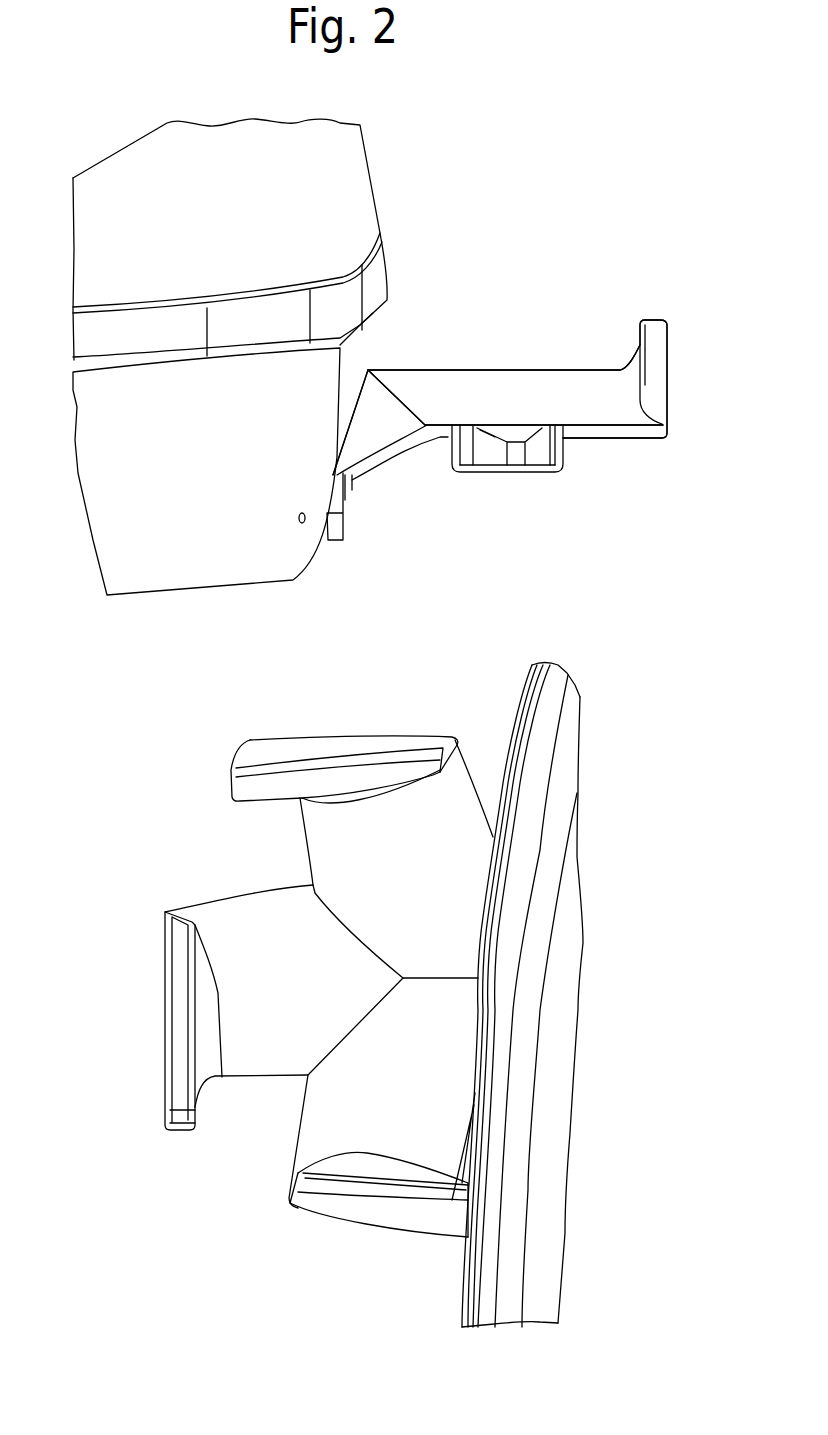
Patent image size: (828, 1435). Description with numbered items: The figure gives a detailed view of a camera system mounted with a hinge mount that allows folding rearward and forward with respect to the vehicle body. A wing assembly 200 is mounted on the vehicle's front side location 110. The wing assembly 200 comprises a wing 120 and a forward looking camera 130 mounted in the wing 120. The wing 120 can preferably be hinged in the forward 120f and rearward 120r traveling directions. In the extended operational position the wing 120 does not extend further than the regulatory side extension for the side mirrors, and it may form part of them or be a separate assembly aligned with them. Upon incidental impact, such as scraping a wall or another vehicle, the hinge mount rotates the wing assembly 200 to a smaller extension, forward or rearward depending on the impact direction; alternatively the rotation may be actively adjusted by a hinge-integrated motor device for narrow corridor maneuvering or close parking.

The vehicle front side location 110 is at (320, 222).
The wing 120 is at (550, 387).
The forward traveling direction 120f is at (313, 750).
The rearward traveling direction 120r is at (328, 1217).
The forward looking camera 130 is at (517, 472).
The wing assembly 200 is at (691, 471).